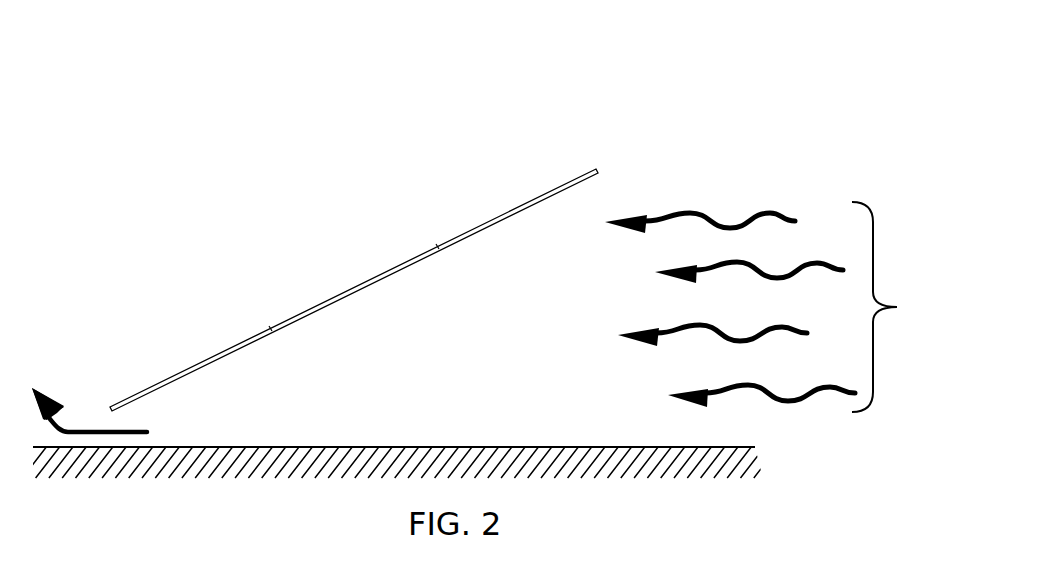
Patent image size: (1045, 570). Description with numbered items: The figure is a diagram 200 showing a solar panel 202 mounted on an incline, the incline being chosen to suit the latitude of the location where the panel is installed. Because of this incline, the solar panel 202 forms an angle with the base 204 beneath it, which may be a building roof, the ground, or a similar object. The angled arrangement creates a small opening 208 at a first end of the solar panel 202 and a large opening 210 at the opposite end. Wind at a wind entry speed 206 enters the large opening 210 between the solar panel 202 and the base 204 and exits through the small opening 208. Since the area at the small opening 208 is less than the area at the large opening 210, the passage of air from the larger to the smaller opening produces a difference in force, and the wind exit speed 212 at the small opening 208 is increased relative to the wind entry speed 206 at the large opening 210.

The diagram 200 is at (303, 67).
The solar panel 202 is at (353, 287).
The base 204 is at (430, 447).
The wind entry speed 206 is at (777, 307).
The small opening 208 is at (90, 410).
The large opening 210 is at (597, 205).
The wind exit speed 212 is at (135, 430).